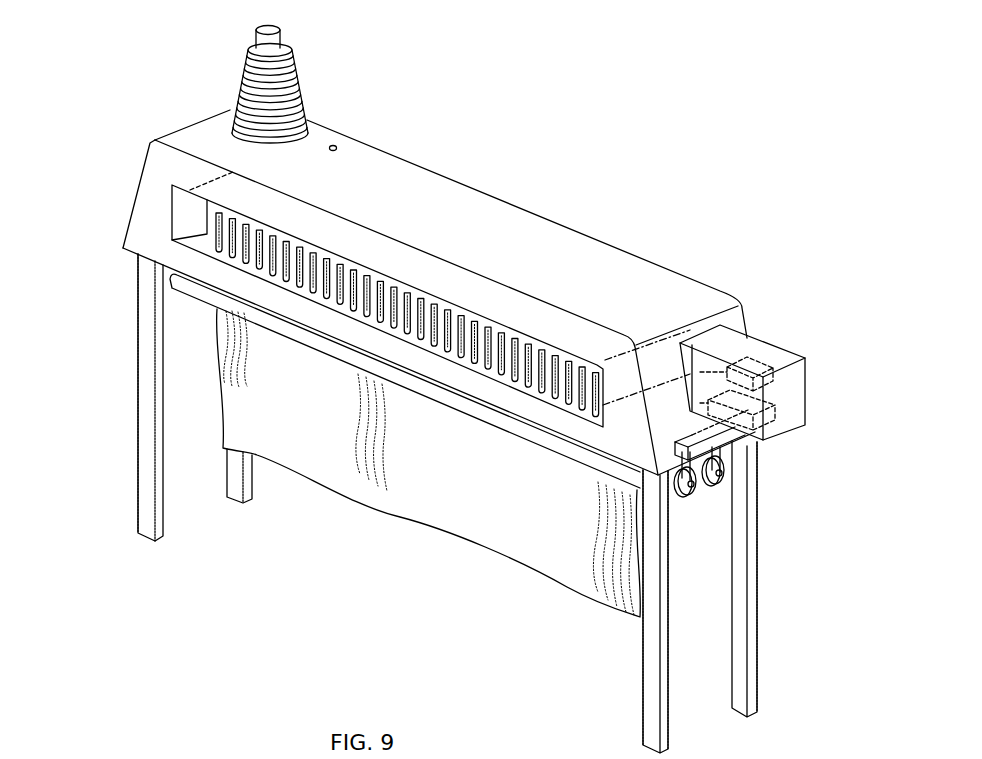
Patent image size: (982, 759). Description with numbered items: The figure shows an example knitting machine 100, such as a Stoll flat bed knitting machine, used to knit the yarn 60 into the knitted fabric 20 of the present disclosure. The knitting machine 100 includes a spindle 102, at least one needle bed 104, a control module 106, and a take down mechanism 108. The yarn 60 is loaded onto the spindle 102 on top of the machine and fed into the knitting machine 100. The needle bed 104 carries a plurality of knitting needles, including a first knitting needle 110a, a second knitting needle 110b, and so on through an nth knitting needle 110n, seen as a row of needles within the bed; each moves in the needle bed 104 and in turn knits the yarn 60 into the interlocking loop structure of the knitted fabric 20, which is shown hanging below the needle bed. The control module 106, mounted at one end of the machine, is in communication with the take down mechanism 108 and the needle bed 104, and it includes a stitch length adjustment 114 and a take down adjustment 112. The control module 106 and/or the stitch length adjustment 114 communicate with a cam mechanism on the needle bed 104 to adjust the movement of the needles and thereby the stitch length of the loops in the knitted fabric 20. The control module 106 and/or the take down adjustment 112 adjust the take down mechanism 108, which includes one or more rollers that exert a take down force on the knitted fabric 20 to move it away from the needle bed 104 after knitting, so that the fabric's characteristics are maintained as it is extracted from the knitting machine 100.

The knitting machine 100 is at (537, 81).
The knitted fabric 20 is at (353, 487).
The yarn 60 is at (243, 70).
The spindle 102 is at (333, 147).
The needle bed 104 is at (353, 257).
The control module 106 is at (782, 357).
The take down mechanism 108 is at (202, 290).
The knitting needle 110a is at (212, 222).
The knitting needle 110b is at (232, 233).
The knitting needle 110n is at (591, 368).
The take down adjustment 112 is at (765, 420).
The stitch length adjustment 114 is at (751, 366).